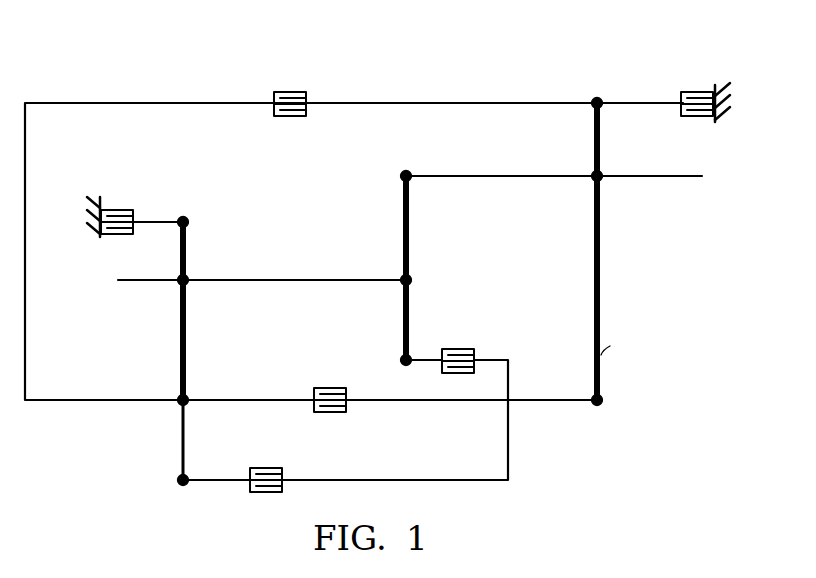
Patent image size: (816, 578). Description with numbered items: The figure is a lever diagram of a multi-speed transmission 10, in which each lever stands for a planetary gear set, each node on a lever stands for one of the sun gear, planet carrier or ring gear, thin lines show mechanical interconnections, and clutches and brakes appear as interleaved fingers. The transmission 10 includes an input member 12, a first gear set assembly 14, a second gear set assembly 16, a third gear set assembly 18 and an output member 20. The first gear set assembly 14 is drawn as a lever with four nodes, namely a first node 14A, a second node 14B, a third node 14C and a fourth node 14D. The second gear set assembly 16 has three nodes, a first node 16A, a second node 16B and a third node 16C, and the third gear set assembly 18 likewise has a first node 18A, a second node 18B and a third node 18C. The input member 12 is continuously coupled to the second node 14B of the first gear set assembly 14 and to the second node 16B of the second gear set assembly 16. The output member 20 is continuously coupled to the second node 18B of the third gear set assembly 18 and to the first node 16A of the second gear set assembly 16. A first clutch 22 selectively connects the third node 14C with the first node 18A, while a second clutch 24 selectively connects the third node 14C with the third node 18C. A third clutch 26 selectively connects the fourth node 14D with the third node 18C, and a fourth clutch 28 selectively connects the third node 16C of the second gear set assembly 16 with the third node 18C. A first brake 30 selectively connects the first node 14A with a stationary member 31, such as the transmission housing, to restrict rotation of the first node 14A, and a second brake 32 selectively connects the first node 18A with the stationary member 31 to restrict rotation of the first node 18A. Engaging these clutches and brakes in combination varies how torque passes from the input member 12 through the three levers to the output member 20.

The multi-speed transmission 10 is at (641, 62).
The input member 12 is at (143, 283).
The first gear set assembly 14 is at (186, 362).
The first node 14A is at (185, 217).
The second node 14B is at (187, 284).
The third node 14C is at (180, 404).
The fourth node 14D is at (178, 481).
The second gear set assembly 16 is at (390, 300).
The first node 16A is at (405, 172).
The second node 16B is at (412, 278).
The third node 16C is at (398, 358).
The third gear set assembly 18 is at (600, 266).
The first node 18A is at (595, 98).
The second node 18B is at (594, 181).
The third node 18C is at (598, 417).
The output member 20 is at (683, 179).
The first clutch 22 is at (290, 91).
The second clutch 24 is at (328, 387).
The third clutch 26 is at (264, 467).
The fourth clutch 28 is at (465, 348).
The first brake 30 is at (118, 209).
The stationary member 31 is at (95, 238).
The second brake 32 is at (690, 116).